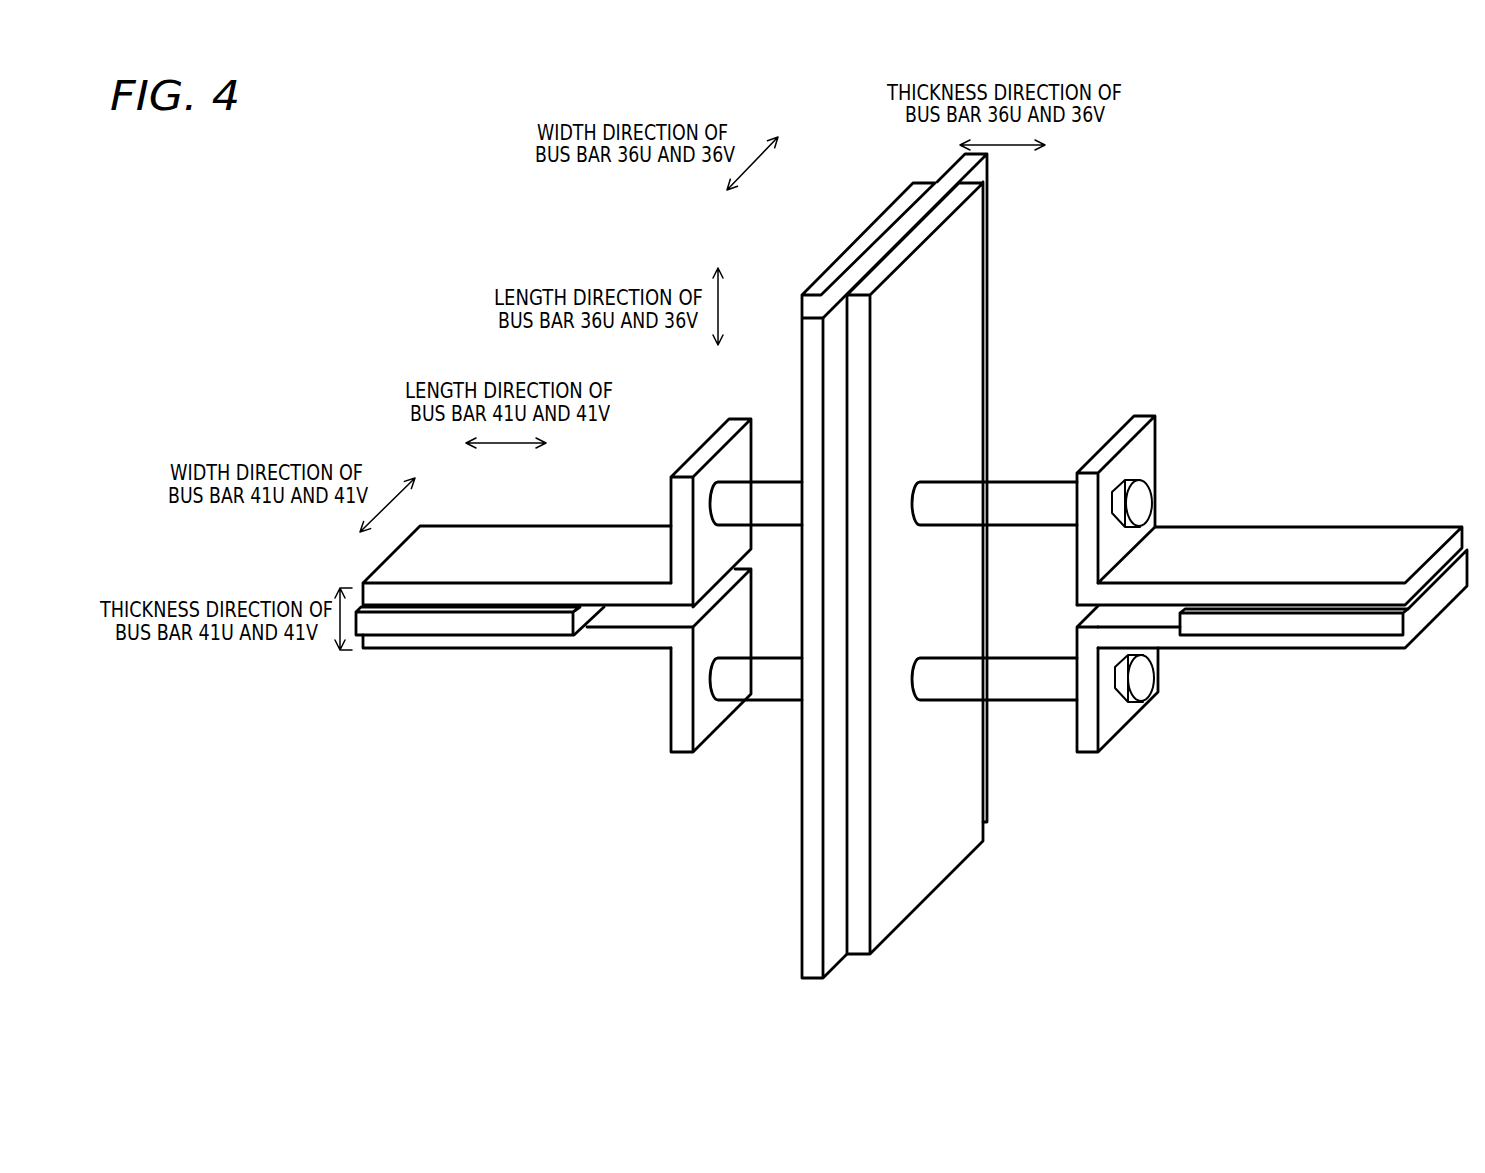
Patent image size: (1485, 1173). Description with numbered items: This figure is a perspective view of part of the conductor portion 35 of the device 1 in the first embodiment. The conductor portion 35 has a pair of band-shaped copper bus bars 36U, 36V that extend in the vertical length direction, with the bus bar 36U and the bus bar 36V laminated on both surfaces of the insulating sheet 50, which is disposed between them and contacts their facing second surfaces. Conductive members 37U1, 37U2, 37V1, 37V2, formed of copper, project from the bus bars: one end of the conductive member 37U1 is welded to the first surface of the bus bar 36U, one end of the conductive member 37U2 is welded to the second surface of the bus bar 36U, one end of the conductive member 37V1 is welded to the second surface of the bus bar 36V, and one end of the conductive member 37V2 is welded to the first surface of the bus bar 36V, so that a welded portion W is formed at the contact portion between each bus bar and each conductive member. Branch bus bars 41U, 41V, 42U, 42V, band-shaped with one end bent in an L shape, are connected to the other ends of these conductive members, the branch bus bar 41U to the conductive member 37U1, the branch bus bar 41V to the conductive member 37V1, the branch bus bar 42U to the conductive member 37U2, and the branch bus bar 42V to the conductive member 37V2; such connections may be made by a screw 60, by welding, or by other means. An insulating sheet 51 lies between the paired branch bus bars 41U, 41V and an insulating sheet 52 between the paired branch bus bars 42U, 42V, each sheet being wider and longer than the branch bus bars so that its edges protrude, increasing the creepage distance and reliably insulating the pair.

The power conversion device 1 is at (1200, 160).
The conductor portion 35 is at (1108, 320).
The bus bar 36U is at (856, 256).
The bus bar 36V is at (963, 247).
The conductive member 37U1 is at (770, 686).
The conductive member 37U2 is at (1030, 690).
The conductive member 37V1 is at (780, 490).
The conductive member 37V2 is at (1030, 490).
The branch bus bar 41U is at (483, 642).
The branch bus bar 41V is at (485, 545).
The branch bus bar 42U is at (1332, 642).
The branch bus bar 42V is at (1322, 545).
The insulating sheet 50 is at (961, 171).
The insulating sheet 51 is at (412, 628).
The insulating sheet 52 is at (1255, 625).
The screw 60 is at (1140, 503).
The welded portion W is at (929, 478).